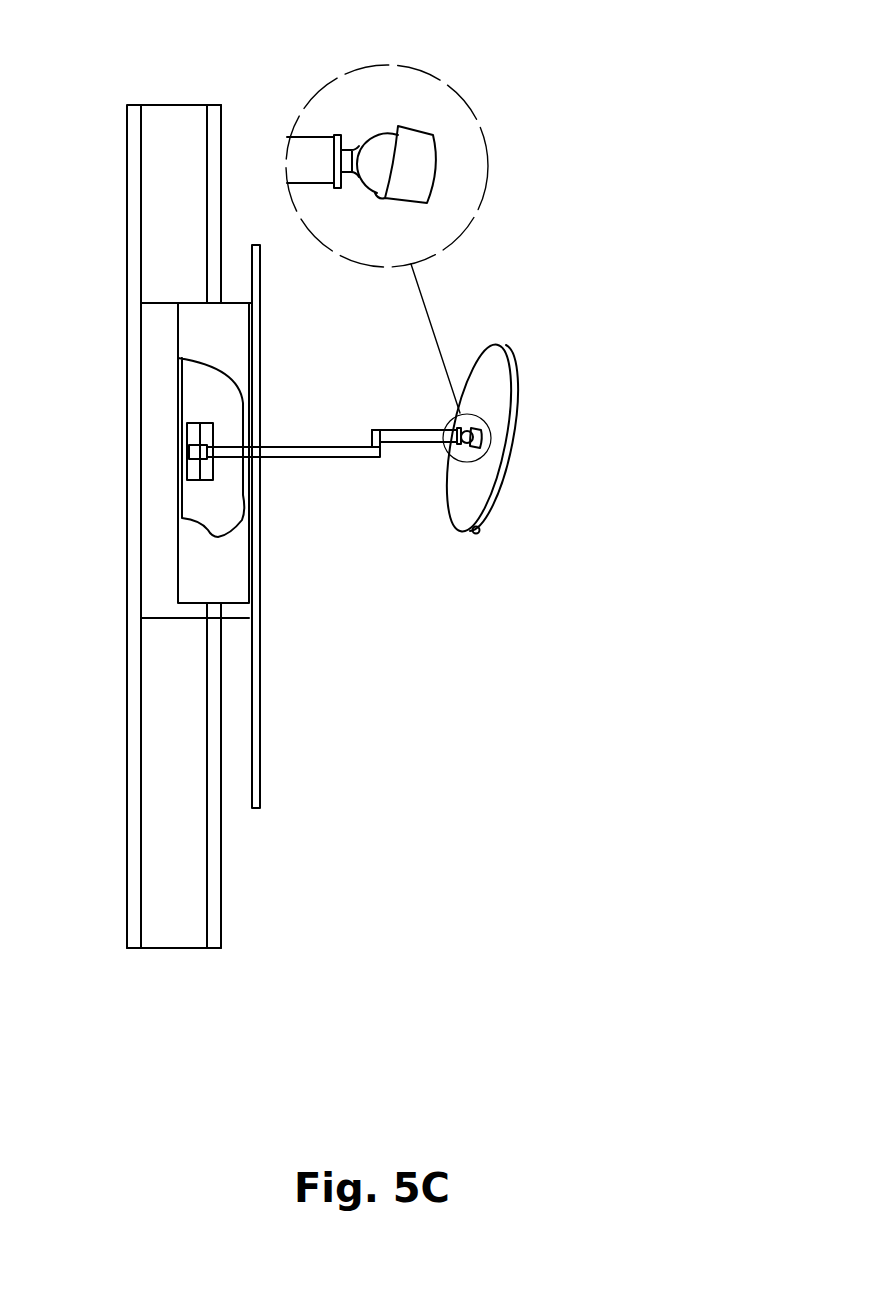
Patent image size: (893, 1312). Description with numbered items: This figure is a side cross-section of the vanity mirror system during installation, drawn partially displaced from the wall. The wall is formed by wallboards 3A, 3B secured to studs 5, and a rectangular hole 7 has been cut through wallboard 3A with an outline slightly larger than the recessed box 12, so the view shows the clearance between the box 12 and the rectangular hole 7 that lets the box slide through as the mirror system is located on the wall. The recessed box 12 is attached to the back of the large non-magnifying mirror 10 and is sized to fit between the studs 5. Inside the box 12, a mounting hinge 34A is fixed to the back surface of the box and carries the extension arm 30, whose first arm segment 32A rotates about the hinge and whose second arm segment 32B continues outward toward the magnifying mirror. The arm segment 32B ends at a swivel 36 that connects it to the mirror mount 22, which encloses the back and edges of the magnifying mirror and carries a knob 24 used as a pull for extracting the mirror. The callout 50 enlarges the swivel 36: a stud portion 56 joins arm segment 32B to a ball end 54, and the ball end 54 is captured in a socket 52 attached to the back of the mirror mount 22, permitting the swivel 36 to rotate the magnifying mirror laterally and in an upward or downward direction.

The wallboard 3A is at (220, 887).
The wallboard 3B is at (127, 895).
The stud 5 is at (165, 948).
The rectangular hole 7 is at (208, 603).
The non-magnifying mirror 10 is at (259, 775).
The recessed box 12 is at (192, 602).
The mirror mount 22 is at (500, 358).
The knob 24 is at (480, 533).
The extension arm 30 is at (352, 495).
The arm segment 32A is at (293, 447).
The arm segment 32B is at (418, 430).
The mounting hinge 34A is at (208, 432).
The swivel 36 is at (472, 443).
The callout 50 is at (412, 244).
The socket 52 is at (428, 143).
The ball end 54 is at (377, 140).
The stud portion 56 is at (350, 154).